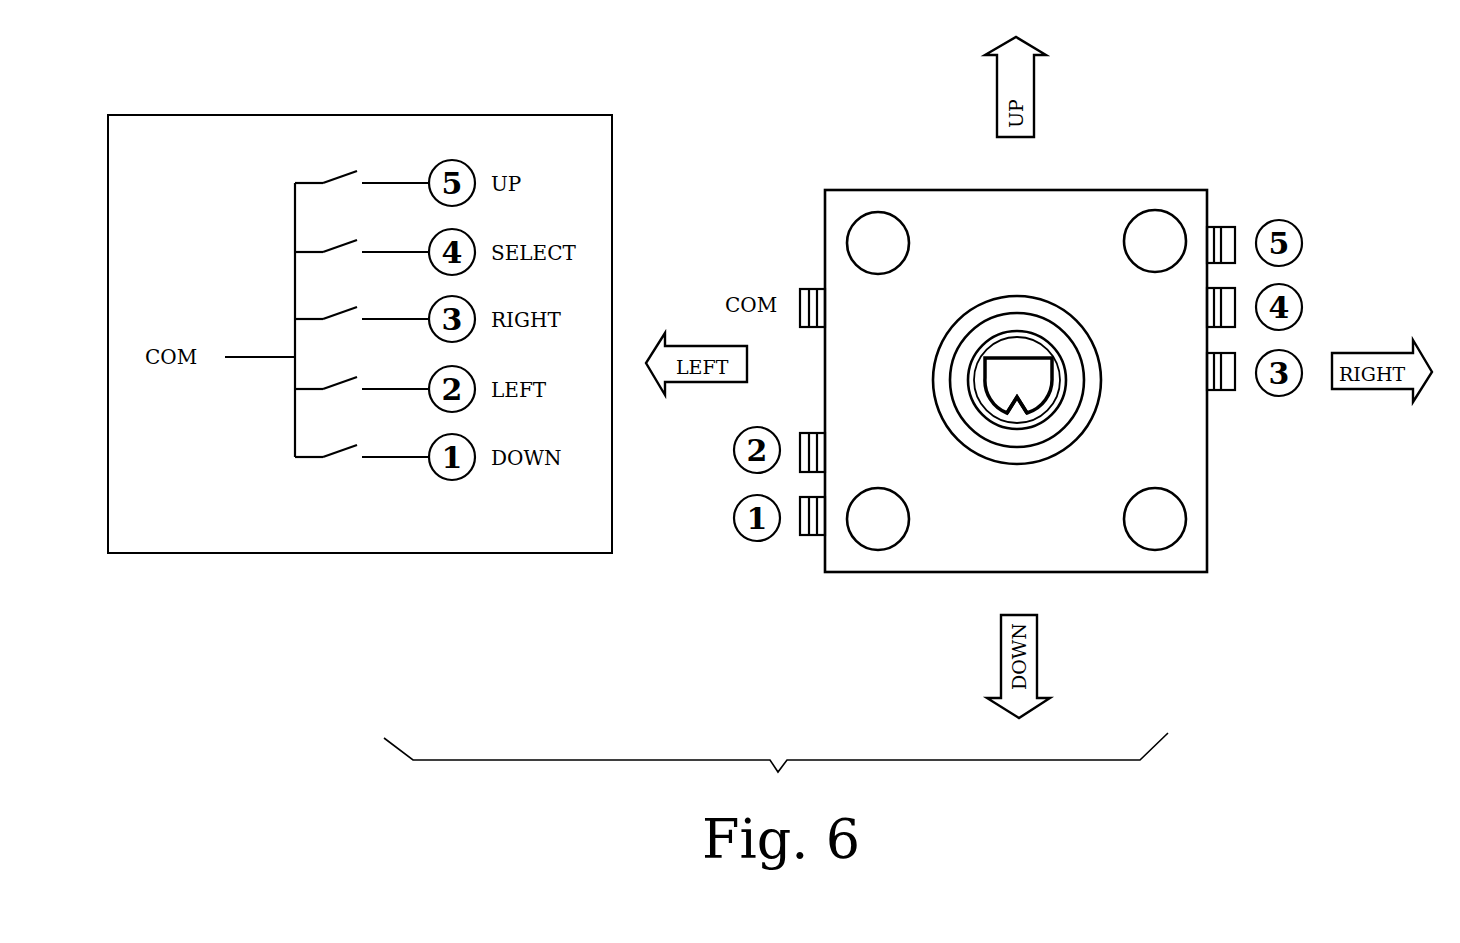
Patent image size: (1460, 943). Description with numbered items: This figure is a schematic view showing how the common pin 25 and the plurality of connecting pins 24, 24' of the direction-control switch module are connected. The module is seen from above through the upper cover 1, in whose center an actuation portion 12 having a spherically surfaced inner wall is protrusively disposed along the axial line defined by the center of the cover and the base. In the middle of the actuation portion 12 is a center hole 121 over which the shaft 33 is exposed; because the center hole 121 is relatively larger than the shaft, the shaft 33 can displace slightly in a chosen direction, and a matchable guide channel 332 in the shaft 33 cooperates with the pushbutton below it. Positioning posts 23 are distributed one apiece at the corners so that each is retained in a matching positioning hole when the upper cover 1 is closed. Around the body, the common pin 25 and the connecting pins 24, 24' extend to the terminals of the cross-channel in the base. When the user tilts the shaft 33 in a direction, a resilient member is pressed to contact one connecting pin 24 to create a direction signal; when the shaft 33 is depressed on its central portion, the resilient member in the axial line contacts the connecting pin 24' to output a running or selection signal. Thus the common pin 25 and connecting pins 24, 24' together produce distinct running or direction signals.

The upper cover 1 is at (953, 202).
The actuation portion 12 is at (1045, 448).
The center hole 121 is at (1000, 330).
The positioning post 23 is at (1158, 222).
The connecting pin 24 is at (1256, 418).
The connecting pin 24' is at (1281, 264).
The common pin 25 is at (803, 291).
The shaft 33 is at (1037, 376).
The guide channel 332 is at (1028, 398).